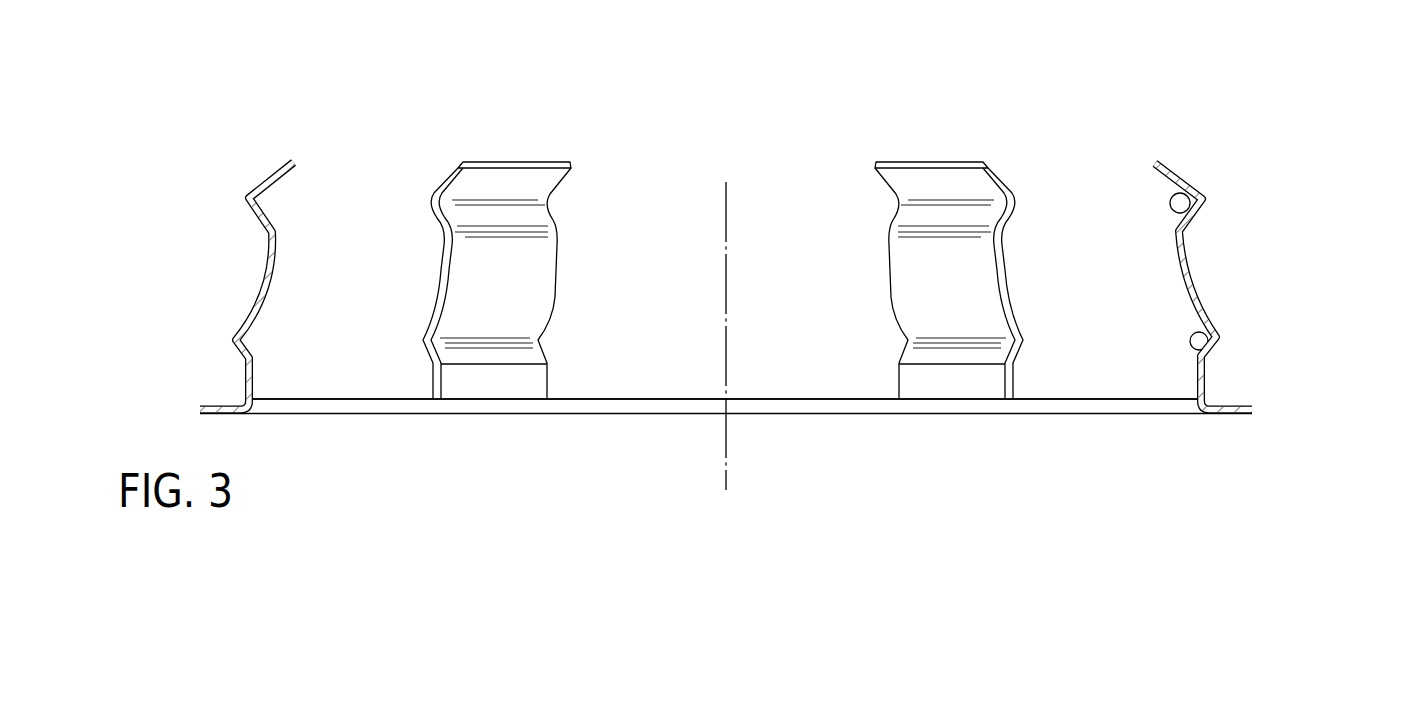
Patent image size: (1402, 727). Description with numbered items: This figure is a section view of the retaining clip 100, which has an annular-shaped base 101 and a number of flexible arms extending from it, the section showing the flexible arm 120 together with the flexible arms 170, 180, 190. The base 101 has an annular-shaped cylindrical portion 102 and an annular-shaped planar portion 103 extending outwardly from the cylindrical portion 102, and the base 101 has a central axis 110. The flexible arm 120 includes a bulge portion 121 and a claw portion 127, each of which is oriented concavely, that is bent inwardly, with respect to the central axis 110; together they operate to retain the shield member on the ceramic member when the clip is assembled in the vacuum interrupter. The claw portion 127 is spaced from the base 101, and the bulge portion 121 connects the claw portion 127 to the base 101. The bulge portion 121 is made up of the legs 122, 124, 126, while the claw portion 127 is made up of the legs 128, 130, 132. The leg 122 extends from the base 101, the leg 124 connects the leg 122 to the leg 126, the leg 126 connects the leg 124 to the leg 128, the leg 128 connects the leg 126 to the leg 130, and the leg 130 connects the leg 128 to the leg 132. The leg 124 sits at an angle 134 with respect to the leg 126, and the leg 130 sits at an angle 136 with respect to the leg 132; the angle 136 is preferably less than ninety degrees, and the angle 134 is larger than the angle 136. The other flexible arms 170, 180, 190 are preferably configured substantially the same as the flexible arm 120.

The retaining clip 100 is at (1183, 125).
The base 101 is at (308, 425).
The cylindrical portion 102 is at (350, 399).
The planar portion 103 is at (220, 404).
The central axis 110 is at (726, 259).
The flexible arm 120 is at (1212, 254).
The bulge portion 121 is at (1225, 337).
The leg 122 is at (1208, 385).
The leg 124 is at (1220, 353).
The leg 126 is at (1218, 333).
The claw portion 127 is at (1222, 203).
The leg 128 is at (1183, 291).
The leg 130 is at (1193, 222).
The leg 132 is at (1185, 176).
The angle 134 is at (1190, 352).
The angle 136 is at (1172, 210).
The flexible arm 170 is at (262, 180).
The flexible arm 180 is at (508, 160).
The flexible arm 190 is at (950, 160).